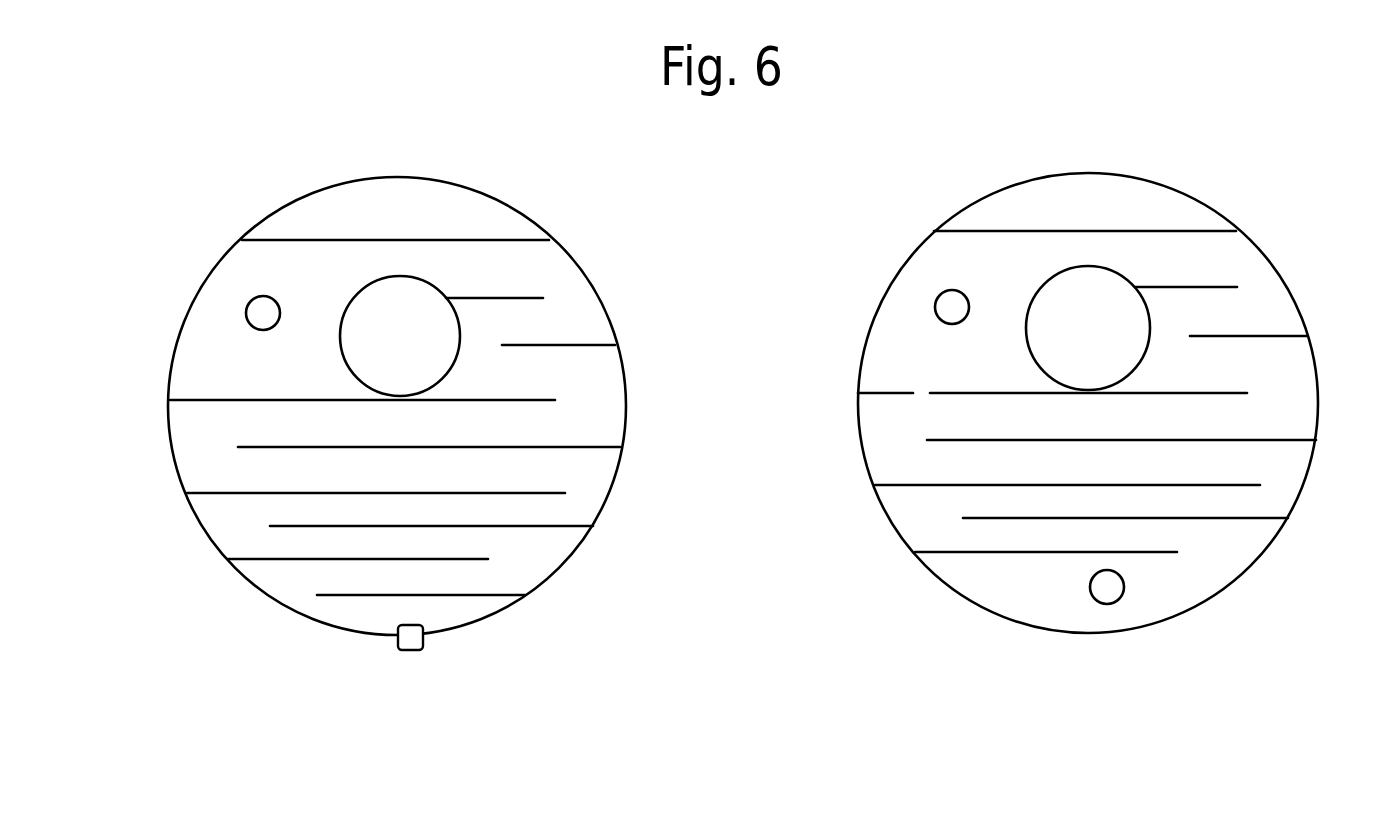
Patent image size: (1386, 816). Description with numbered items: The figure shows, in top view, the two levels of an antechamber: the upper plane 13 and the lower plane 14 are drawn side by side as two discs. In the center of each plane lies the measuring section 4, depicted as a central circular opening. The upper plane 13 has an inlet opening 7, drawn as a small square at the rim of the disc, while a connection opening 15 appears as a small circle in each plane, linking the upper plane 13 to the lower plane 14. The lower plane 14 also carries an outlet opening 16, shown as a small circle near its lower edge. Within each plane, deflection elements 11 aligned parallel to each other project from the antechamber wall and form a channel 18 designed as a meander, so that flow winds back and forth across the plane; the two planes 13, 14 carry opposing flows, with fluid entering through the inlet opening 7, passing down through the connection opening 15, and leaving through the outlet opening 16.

The measuring section 4 is at (393, 357).
The inlet opening 7 is at (411, 640).
The deflection elements 11 is at (268, 449).
The upper plane 13 is at (517, 618).
The lower plane 14 is at (956, 599).
The connection opening 15 is at (265, 318).
The outlet opening 16 is at (1101, 582).
The channel 18 is at (532, 268).